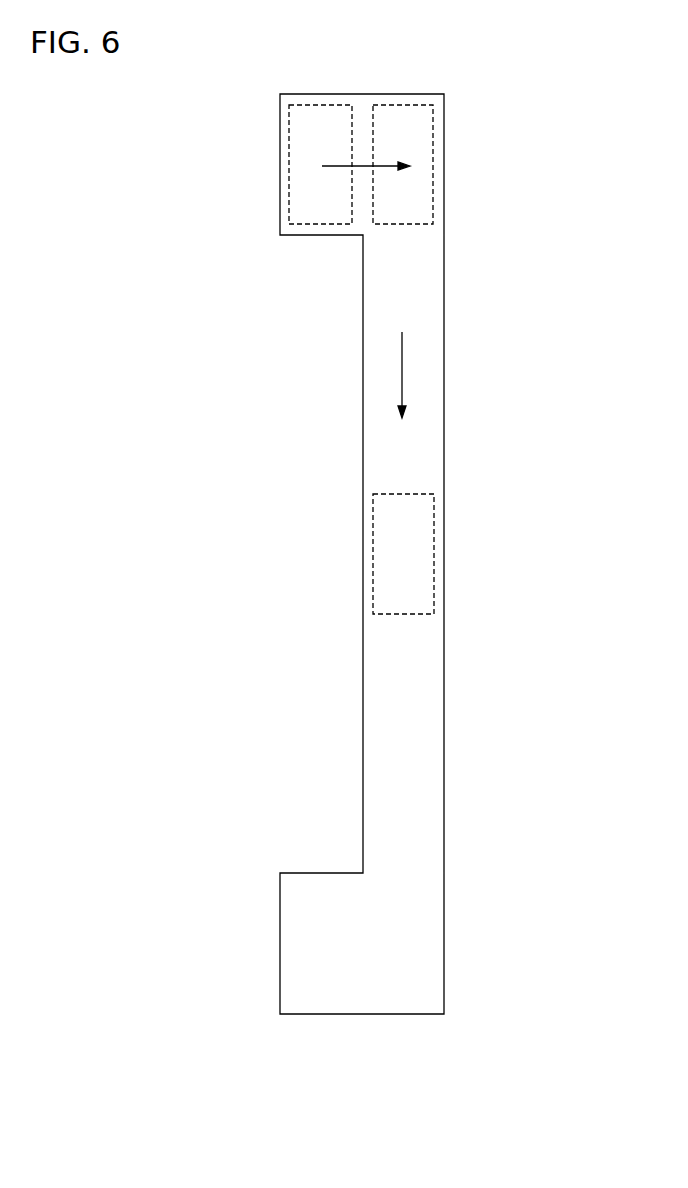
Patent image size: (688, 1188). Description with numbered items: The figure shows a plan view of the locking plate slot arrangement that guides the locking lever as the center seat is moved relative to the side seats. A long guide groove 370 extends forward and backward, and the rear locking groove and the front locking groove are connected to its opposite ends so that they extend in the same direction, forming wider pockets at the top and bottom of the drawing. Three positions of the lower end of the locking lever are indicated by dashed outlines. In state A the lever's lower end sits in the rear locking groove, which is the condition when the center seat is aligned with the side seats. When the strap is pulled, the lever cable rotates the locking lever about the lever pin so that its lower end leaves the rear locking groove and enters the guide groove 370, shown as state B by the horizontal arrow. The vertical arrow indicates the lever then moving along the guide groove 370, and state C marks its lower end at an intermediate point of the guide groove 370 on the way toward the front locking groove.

The guide groove 370 is at (444, 745).